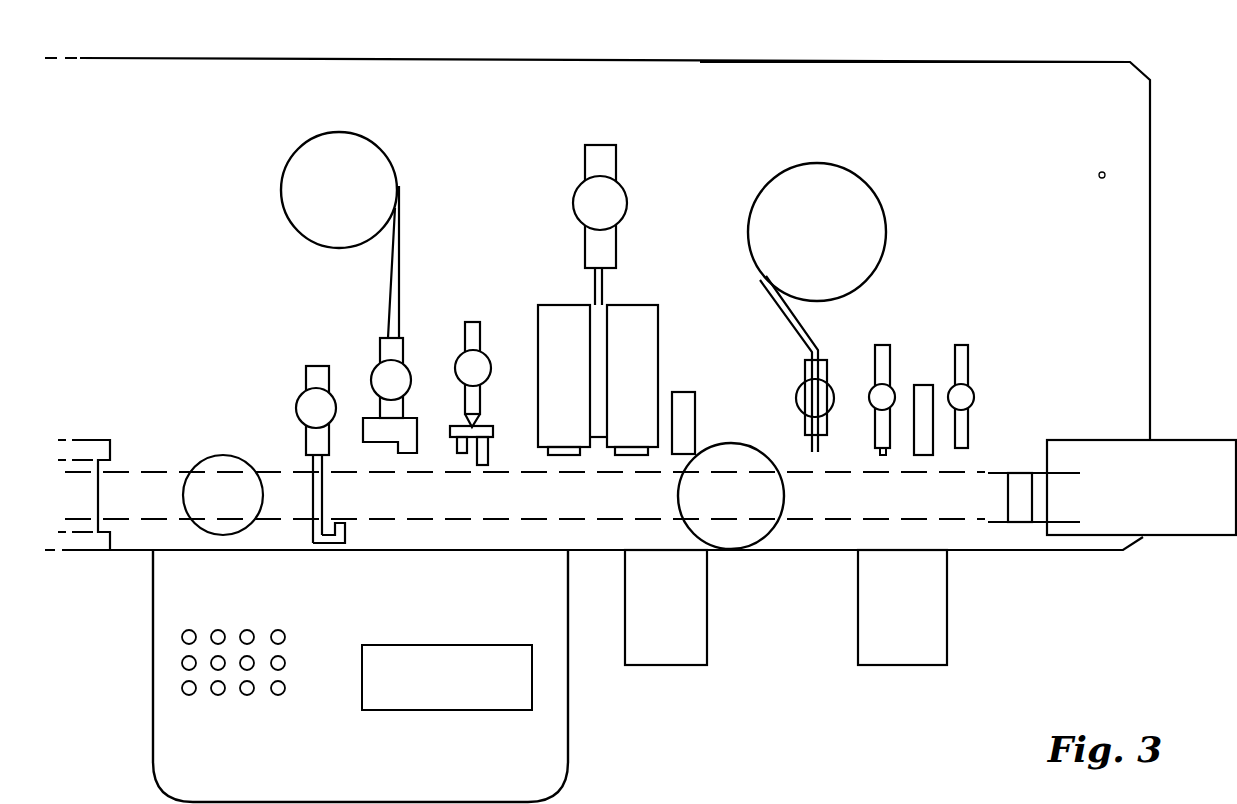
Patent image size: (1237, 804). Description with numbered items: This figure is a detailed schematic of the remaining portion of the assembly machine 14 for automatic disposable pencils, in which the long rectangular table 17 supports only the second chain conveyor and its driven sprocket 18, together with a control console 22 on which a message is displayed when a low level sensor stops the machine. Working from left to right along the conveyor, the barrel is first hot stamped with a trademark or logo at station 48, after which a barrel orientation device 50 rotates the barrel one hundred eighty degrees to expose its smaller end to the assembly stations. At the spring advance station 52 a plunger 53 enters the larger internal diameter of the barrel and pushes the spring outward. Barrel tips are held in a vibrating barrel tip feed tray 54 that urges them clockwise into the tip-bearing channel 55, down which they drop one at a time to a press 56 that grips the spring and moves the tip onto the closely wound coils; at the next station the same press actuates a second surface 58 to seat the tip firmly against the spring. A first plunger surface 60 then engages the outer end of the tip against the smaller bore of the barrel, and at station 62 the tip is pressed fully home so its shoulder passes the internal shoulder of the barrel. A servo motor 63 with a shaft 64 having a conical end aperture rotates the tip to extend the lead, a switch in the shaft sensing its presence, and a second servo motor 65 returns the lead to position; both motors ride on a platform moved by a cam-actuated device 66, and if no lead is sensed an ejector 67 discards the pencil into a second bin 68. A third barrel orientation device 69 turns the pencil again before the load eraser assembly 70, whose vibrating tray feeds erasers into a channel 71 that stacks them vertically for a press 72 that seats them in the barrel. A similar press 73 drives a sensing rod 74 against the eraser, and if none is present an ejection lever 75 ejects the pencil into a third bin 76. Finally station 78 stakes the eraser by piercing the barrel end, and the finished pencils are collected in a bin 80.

The assembly machine 14 is at (610, 58).
The table 17 is at (970, 77).
The sprocket 18 is at (998, 522).
The control console 22 is at (557, 737).
The hot stamping station 48 is at (98, 447).
The barrel orientation device 50 is at (212, 470).
The spring advance station 52 is at (318, 367).
The plunger 53 is at (346, 530).
The barrel tip feed tray 54 is at (378, 157).
The tip-bearing channel 55 is at (398, 243).
The press 56 is at (385, 423).
The second surface 58 is at (412, 447).
The first plunger surface 60 is at (470, 428).
The station 62 is at (489, 453).
The servo motor 63 is at (572, 376).
The shaft 64 is at (570, 455).
The second servo motor 65 is at (632, 376).
The cam-actuated device 66 is at (619, 193).
The ejector 67 is at (683, 398).
The second bin 68 is at (666, 607).
The third barrel orientation device 69 is at (735, 498).
The load eraser assembly 70 is at (863, 212).
The channel 71 is at (800, 327).
The press 72 is at (800, 390).
The press 73 is at (883, 357).
The sensing rod 74 is at (878, 450).
The ejection lever 75 is at (925, 390).
The third bin 76 is at (902, 607).
The staking station 78 is at (963, 357).
The bin 80 is at (1141, 487).